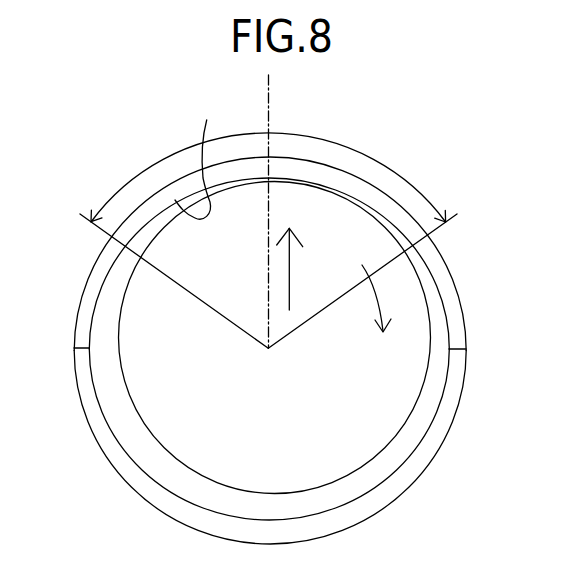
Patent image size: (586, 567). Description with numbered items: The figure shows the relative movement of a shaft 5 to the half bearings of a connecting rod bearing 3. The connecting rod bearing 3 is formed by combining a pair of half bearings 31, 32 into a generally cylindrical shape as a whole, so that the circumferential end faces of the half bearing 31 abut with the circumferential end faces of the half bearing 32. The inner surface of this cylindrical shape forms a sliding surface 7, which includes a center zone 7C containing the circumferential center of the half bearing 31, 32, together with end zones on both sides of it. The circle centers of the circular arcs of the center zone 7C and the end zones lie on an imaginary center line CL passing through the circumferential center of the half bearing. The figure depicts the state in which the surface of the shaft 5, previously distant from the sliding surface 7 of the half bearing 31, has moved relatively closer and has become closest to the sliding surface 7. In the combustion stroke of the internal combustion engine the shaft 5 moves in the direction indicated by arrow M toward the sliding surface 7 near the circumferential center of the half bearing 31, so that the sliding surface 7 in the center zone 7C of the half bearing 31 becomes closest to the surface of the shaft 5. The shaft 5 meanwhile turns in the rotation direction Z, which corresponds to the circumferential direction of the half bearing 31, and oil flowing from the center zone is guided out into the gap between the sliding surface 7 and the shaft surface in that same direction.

The connecting rod bearing 3 is at (302, 319).
The half bearing 31 is at (456, 310).
The half bearing 32 is at (430, 445).
The shaft 5 is at (203, 451).
The sliding surface 7 is at (195, 158).
The center zone 7C is at (268, 240).
The center line CL is at (270, 113).
The arrow M is at (288, 292).
The rotation direction Z is at (382, 311).